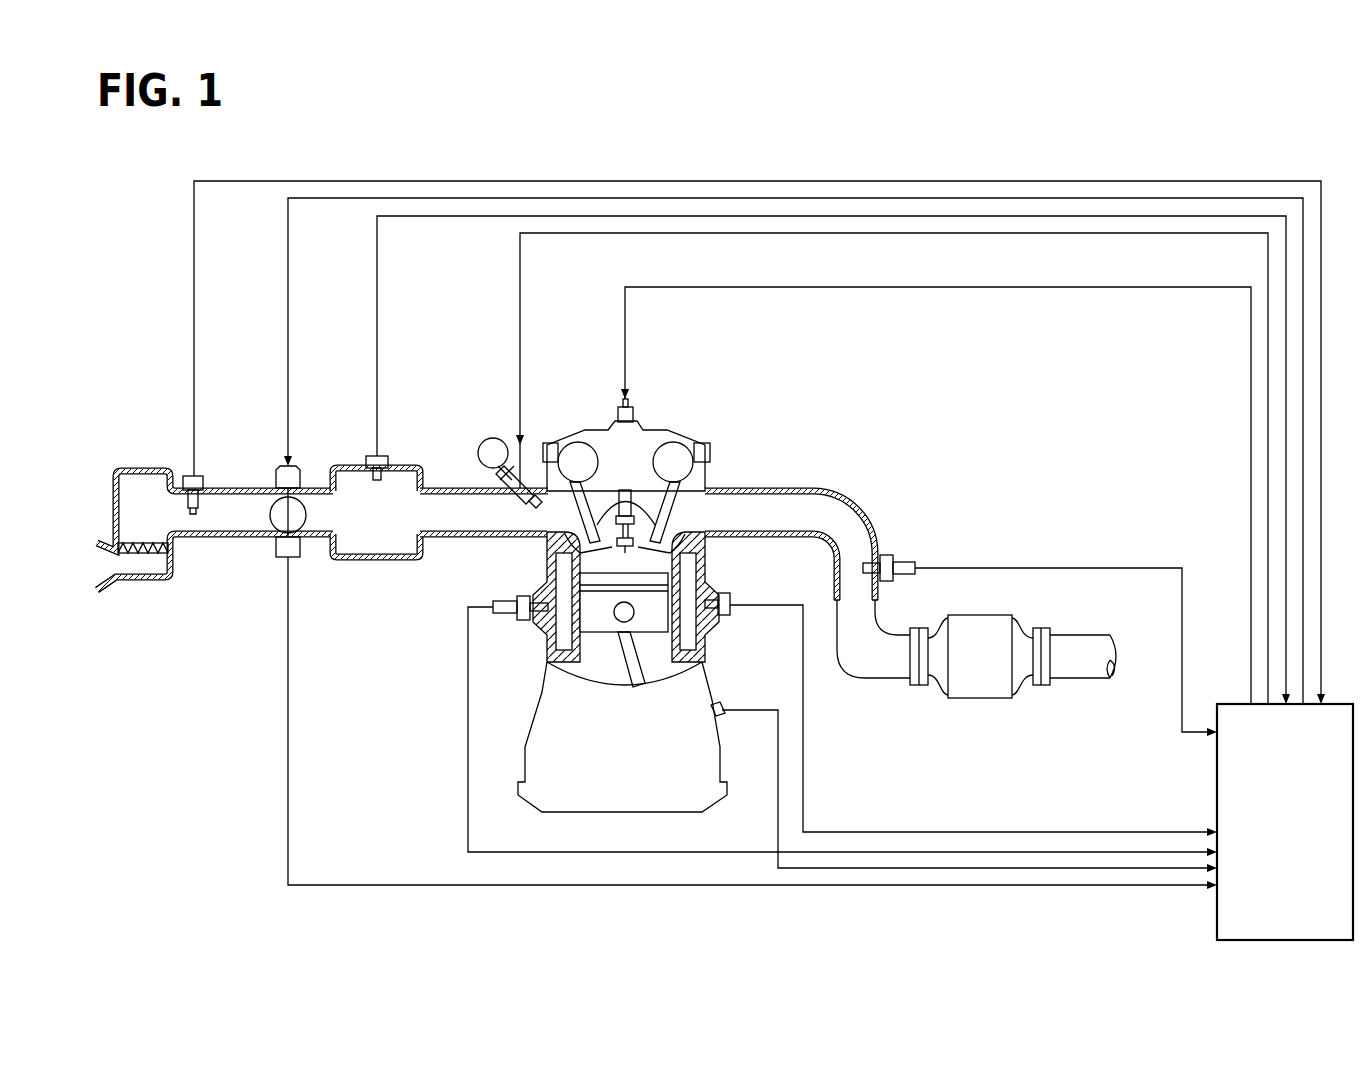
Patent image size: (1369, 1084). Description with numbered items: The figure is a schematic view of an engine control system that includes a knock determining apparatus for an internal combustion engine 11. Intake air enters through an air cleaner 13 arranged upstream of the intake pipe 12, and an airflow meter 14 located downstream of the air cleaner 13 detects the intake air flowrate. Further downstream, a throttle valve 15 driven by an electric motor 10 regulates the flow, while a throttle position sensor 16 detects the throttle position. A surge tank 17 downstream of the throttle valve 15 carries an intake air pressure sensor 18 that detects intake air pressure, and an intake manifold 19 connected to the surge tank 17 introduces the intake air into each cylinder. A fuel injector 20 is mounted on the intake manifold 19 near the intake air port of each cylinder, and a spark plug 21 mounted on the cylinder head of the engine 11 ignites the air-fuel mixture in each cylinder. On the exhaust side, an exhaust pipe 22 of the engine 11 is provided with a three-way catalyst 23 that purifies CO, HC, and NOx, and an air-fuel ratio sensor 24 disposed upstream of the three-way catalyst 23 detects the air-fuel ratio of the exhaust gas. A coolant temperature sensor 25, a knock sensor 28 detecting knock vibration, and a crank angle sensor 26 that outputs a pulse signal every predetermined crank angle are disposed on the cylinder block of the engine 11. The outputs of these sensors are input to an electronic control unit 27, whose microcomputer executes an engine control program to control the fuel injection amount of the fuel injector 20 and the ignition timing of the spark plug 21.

The electric motor 10 is at (297, 474).
The internal combustion engine 11 is at (673, 442).
The intake pipe 12 is at (238, 488).
The air cleaner 13 is at (138, 556).
The airflow meter 14 is at (186, 476).
The throttle valve 15 is at (296, 520).
The throttle position sensor 16 is at (280, 559).
The surge tank 17 is at (342, 472).
The intake air pressure sensor 18 is at (388, 458).
The intake manifold 19 is at (428, 490).
The fuel injector 20 is at (488, 465).
The spark plug 21 is at (640, 520).
The exhaust pipe 22 is at (815, 490).
The three-way catalyst 23 is at (993, 616).
The air-fuel ratio sensor 24 is at (885, 556).
The coolant temperature sensor 25 is at (528, 622).
The crank angle sensor 26 is at (714, 705).
The electronic control unit 27 is at (1217, 912).
The knock sensor 28 is at (730, 596).